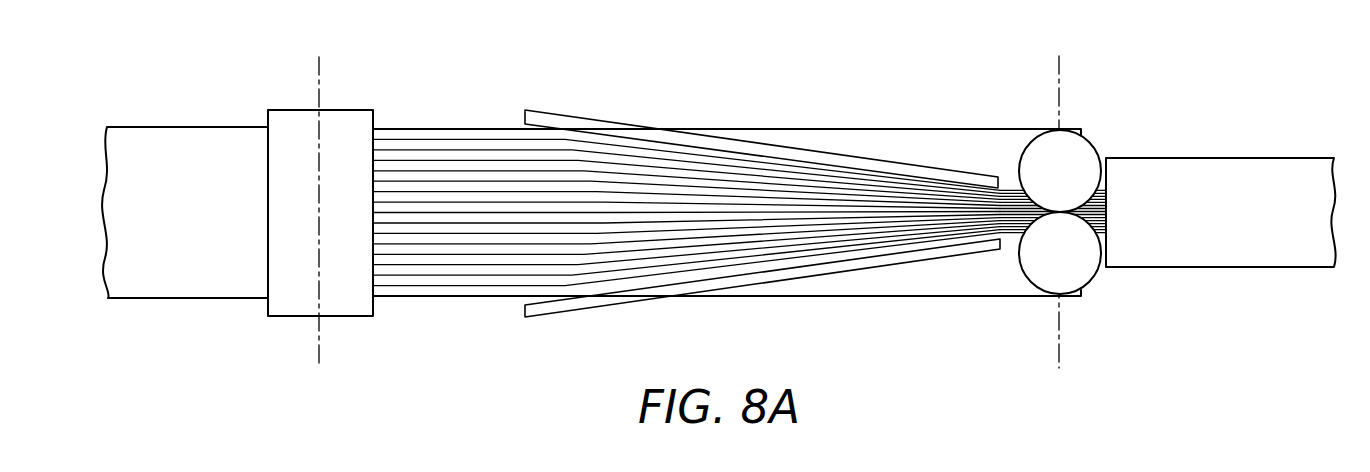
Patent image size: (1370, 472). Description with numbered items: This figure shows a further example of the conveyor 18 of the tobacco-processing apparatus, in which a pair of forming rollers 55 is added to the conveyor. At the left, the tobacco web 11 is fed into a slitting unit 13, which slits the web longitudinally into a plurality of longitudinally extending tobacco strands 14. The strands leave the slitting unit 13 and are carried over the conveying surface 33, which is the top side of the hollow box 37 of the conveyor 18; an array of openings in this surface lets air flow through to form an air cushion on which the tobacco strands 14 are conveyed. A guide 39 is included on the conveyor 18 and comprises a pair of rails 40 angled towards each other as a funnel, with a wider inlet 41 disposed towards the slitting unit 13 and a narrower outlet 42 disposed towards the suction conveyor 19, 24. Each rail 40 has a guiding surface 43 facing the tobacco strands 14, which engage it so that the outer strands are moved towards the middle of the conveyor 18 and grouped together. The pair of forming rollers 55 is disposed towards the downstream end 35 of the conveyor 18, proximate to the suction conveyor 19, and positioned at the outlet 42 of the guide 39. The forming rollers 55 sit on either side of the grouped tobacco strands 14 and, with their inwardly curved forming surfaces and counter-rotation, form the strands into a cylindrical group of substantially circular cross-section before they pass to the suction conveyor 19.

The tobacco web 11 is at (178, 127).
The slitting unit 13 is at (357, 110).
The tobacco strands 14 is at (443, 129).
The conveyor 18 is at (727, 182).
The guide 39 is at (552, 113).
The inlet 41 is at (518, 303).
The rails 40 is at (733, 212).
The box 37 is at (727, 184).
The conveying surface 33 is at (727, 184).
The guiding surface 43 is at (885, 129).
The outlet 42 is at (1007, 202).
The forming rollers 55 is at (1082, 152).
The downstream end 35 is at (1083, 210).
The suction conveyor 19 is at (1221, 169).
The connector / ferrule 24 is at (1260, 158).